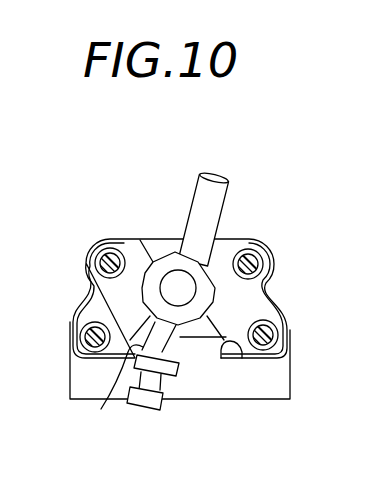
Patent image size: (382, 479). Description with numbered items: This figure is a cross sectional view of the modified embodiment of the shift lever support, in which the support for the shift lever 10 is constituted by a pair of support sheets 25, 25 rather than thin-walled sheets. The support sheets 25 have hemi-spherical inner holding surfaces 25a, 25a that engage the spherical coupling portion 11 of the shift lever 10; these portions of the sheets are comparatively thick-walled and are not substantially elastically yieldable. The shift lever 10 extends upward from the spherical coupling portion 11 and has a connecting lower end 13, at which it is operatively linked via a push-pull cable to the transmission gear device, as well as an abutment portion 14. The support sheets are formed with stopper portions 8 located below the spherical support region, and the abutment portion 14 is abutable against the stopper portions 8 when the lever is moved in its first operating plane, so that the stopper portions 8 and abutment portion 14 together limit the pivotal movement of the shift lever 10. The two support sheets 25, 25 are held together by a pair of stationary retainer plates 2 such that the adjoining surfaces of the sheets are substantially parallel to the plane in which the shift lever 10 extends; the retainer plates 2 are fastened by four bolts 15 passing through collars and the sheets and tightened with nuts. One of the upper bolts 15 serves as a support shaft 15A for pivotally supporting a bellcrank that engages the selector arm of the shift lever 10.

The stationary retainer plate 2 is at (292, 372).
The stopper portion 8 is at (242, 358).
The shift lever 10 is at (202, 205).
The spherical coupling portion 11 is at (152, 287).
The connecting lower end 13 is at (152, 405).
The abutment portion 14 is at (168, 362).
The bolt 15 is at (98, 257).
The support shaft 15A is at (258, 258).
The support sheet 25 is at (132, 248).
The hemi-spherical inner holding surface 25a is at (240, 302).